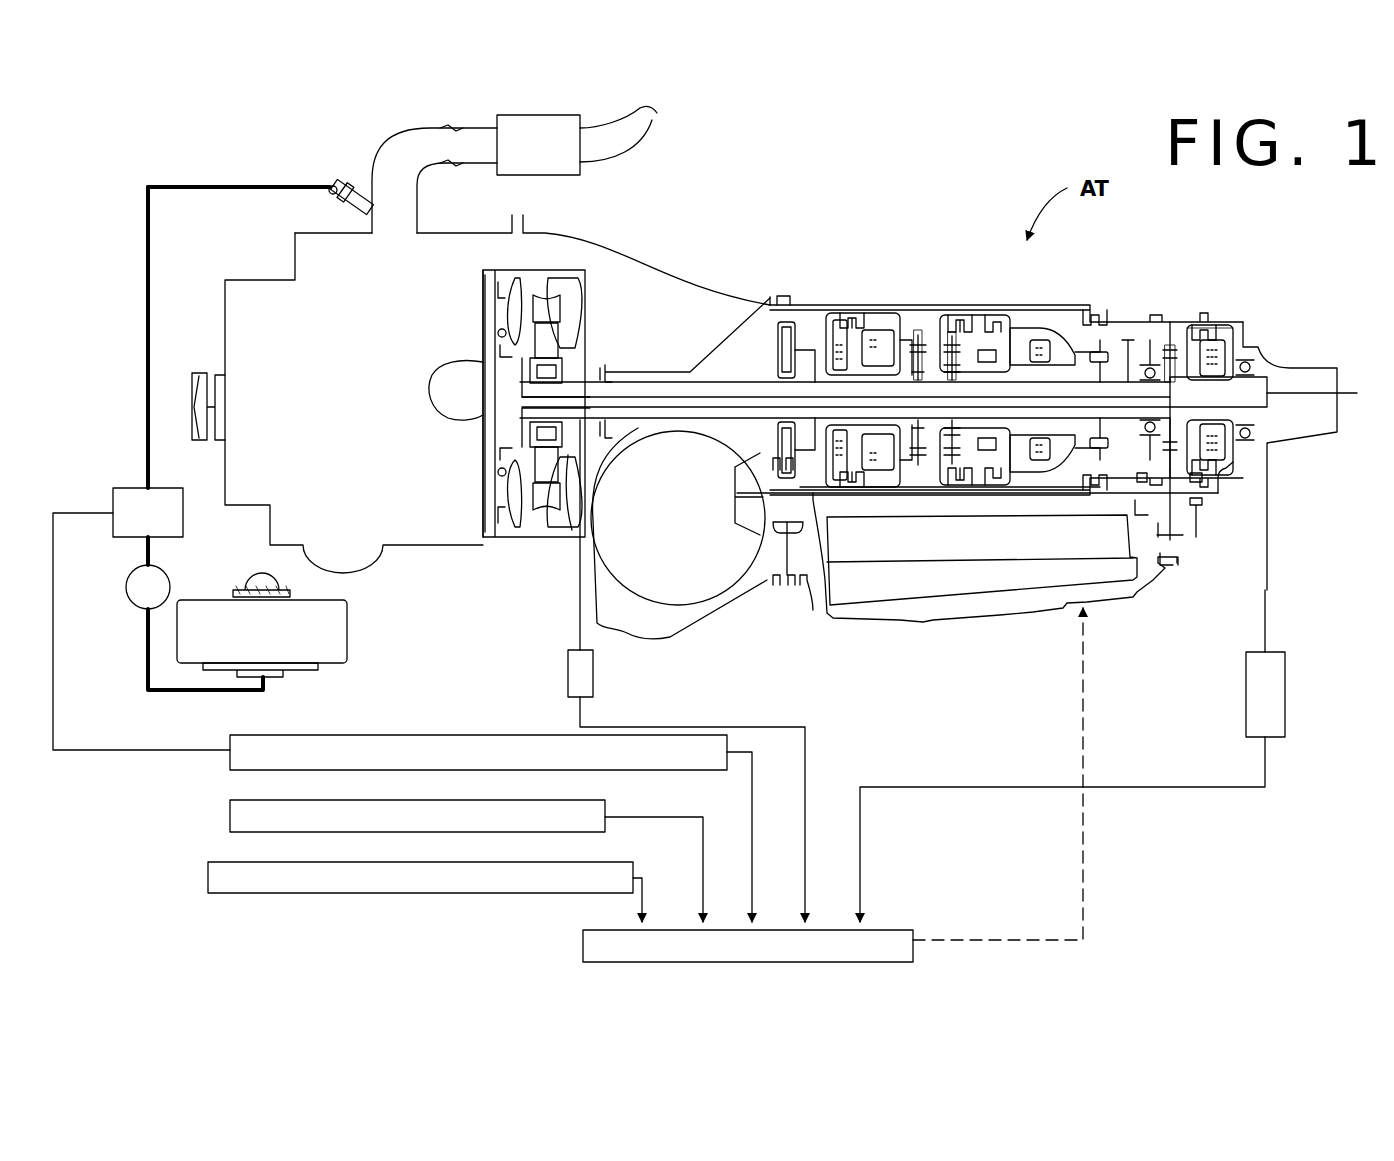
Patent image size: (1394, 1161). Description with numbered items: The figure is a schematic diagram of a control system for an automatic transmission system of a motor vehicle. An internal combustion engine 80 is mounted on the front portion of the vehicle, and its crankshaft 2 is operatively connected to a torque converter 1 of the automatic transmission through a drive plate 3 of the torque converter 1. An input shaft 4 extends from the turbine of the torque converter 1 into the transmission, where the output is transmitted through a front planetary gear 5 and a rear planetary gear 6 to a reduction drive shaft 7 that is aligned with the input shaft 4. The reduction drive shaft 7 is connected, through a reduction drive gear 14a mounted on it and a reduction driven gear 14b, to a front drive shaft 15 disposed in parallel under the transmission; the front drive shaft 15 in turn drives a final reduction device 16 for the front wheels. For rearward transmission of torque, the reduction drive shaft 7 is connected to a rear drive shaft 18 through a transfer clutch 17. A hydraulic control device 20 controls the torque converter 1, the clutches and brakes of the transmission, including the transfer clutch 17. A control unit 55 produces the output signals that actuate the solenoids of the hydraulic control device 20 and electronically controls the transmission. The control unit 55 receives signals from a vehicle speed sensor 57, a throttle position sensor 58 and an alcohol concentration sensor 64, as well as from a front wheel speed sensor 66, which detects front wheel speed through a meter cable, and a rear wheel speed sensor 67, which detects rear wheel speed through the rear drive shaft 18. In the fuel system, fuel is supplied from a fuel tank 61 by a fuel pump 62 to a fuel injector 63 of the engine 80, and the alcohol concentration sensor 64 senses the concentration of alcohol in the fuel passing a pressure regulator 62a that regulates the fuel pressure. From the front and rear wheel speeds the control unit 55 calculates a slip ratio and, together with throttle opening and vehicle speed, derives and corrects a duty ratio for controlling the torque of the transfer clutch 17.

The torque converter 1 is at (580, 282).
The crankshaft 2 is at (472, 405).
The drive plate 3 is at (483, 322).
The input shaft 4 is at (664, 396).
The front planetary gear 5 is at (916, 338).
The rear planetary gear 6 is at (962, 343).
The reduction drive shaft 7 is at (1128, 340).
The reduction drive gear 14a is at (1172, 348).
The reduction driven gear 14b is at (1190, 520).
The front drive shaft 15 is at (794, 548).
The final reduction device 16 is at (667, 607).
The transfer clutch 17 is at (1212, 330).
The rear drive shaft 18 is at (1304, 394).
The hydraulic control device 20 is at (1000, 580).
The control unit 55 is at (915, 938).
The vehicle speed sensor 57 is at (230, 816).
The throttle position sensor 58 is at (407, 892).
The fuel tank 61 is at (347, 618).
The fuel pump 62 is at (172, 575).
The pressure regulator 62a is at (183, 505).
The fuel injector 63 is at (338, 182).
The alcohol concentration sensor 64 is at (230, 752).
The front wheel speed sensor 66 is at (593, 677).
The rear wheel speed sensor 67 is at (1246, 692).
The internal combustion engine 80 is at (318, 386).